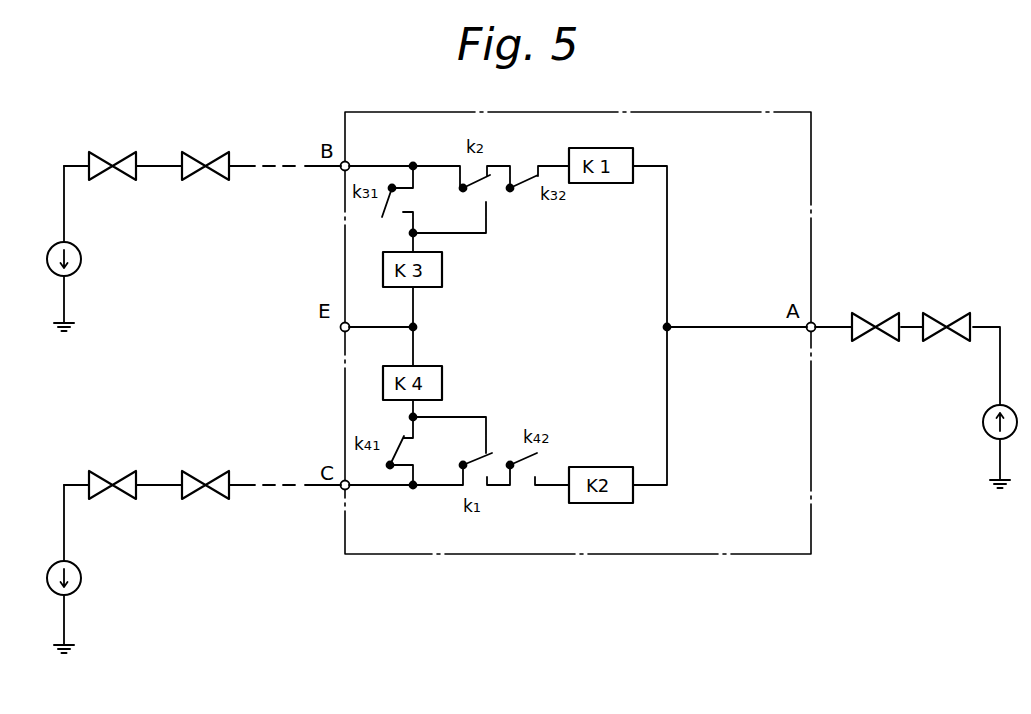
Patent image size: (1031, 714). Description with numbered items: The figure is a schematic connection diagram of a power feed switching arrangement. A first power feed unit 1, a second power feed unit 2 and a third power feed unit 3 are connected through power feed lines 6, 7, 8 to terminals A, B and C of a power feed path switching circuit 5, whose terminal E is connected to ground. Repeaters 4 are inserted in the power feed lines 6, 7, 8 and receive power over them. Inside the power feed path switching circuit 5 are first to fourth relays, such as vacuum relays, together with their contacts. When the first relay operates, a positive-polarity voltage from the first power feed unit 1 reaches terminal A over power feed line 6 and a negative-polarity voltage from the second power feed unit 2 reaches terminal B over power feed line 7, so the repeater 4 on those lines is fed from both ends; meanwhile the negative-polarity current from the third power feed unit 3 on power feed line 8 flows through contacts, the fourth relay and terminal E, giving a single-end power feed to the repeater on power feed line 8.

The first power feed unit 1 is at (1014, 409).
The second power feed unit 2 is at (82, 257).
The third power feed unit 3 is at (82, 576).
The repeaters 4 is at (182, 152).
The power feed path switching circuit 5 is at (712, 112).
The power feed line 6 is at (837, 323).
The power feed line 7 is at (240, 164).
The power feed line 8 is at (240, 482).